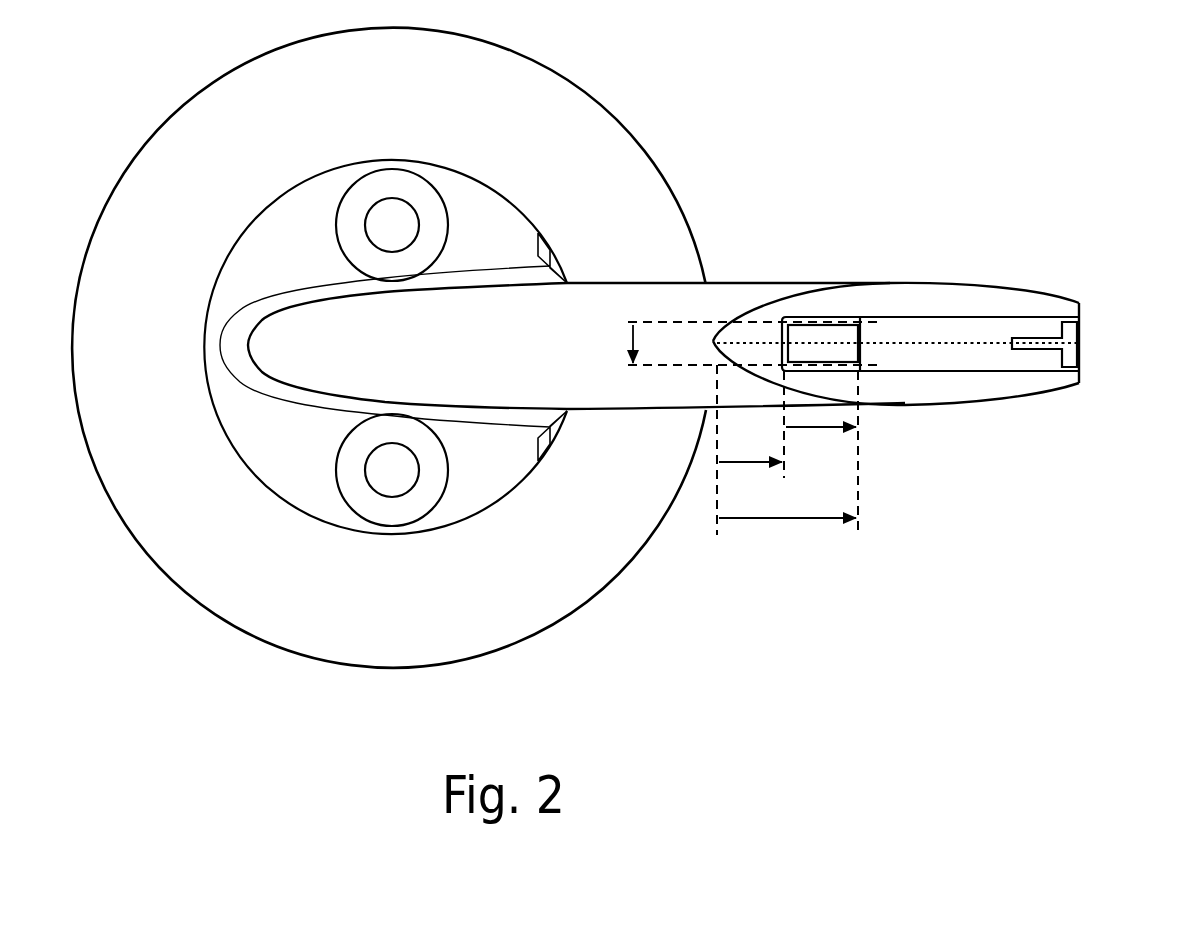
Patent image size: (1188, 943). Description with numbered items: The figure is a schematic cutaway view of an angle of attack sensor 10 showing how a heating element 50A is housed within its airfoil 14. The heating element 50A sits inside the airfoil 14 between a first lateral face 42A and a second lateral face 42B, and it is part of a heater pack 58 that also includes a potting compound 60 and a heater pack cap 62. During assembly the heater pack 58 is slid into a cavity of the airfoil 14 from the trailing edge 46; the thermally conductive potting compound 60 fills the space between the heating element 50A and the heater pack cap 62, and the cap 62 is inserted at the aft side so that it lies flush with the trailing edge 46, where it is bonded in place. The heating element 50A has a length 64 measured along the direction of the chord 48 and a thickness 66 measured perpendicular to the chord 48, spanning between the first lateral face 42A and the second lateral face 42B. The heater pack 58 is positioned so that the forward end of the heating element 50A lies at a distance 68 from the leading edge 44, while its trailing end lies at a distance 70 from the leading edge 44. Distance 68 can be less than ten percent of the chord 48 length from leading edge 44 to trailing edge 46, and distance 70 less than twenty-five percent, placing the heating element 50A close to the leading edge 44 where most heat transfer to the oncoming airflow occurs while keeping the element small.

The angle of attack sensor 10 is at (899, 112).
The airfoil 14 is at (562, 328).
The first lateral face 42A is at (595, 404).
The second lateral face 42B is at (609, 300).
The leading edge 44 is at (722, 358).
The trailing edge 46 is at (1082, 372).
The chord 48 is at (905, 340).
The heating element 50A is at (832, 335).
The heater pack 58 is at (950, 310).
The potting compound 60 is at (949, 356).
The heater pack cap 62 is at (1075, 330).
The length 64 is at (822, 428).
The thickness 66 is at (628, 343).
The distance 68 is at (748, 462).
The distance 70 is at (795, 520).